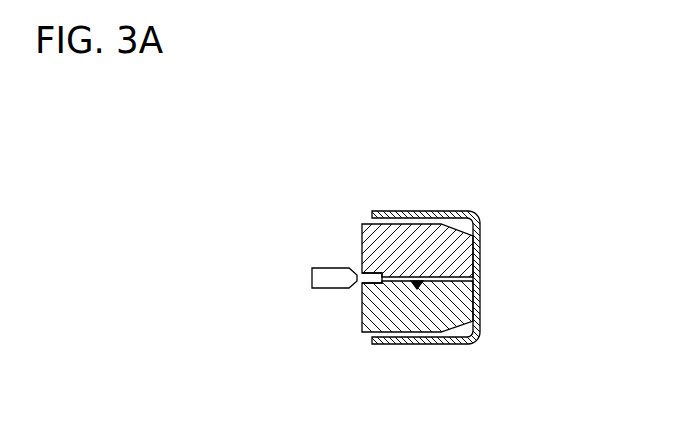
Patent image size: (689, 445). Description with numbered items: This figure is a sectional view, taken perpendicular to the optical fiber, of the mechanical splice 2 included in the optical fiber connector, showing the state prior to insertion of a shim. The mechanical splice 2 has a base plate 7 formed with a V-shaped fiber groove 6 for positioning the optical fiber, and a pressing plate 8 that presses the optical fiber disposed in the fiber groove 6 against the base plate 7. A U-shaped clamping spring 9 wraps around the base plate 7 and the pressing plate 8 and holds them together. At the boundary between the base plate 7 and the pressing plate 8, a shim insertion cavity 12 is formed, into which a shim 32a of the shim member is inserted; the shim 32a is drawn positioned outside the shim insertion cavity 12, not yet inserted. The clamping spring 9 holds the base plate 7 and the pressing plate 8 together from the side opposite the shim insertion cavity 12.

The mechanical splice 2 is at (470, 178).
The fiber groove 6 is at (417, 283).
The base plate 7 is at (388, 318).
The pressing plate 8 is at (385, 238).
The clamping spring 9 is at (477, 250).
The shim insertion cavity 12 is at (367, 278).
The shim 32a is at (322, 273).